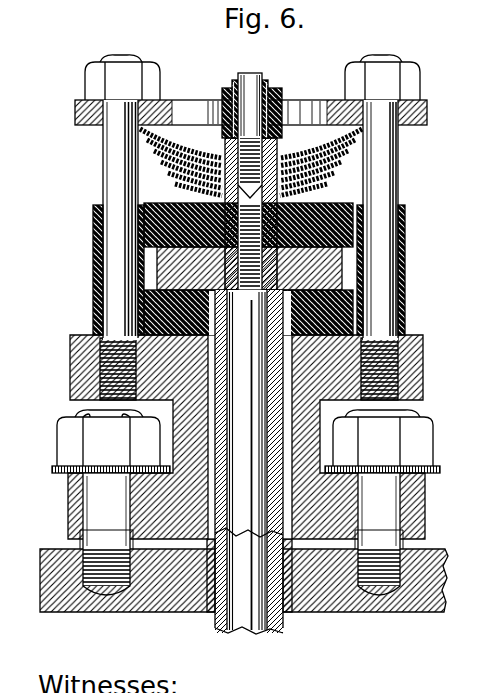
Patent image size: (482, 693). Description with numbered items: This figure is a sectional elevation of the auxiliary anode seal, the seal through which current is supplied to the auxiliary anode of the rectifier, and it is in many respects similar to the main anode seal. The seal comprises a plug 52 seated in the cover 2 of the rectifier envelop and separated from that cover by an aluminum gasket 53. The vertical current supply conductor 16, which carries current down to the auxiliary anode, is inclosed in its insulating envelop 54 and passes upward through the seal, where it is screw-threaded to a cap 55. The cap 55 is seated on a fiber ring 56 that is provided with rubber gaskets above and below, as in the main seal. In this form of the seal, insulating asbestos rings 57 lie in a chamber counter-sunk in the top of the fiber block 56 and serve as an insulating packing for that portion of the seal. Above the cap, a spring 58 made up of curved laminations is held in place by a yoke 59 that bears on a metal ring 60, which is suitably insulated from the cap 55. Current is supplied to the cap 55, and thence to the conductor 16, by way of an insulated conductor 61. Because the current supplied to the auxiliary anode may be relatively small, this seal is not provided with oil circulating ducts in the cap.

The cover 2 is at (481, 562).
The vertical current supply conductor 16 is at (284, 614).
The plug 52 is at (481, 371).
The aluminum gasket 53 is at (195, 549).
The insulating envelop 54 is at (246, 632).
The cap 55 is at (357, 273).
The fiber ring 56 is at (355, 319).
The insulating asbestos rings 57 is at (215, 286).
The spring 58 is at (148, 157).
The yoke 59 is at (168, 100).
The metal ring 60 is at (155, 206).
The insulated conductor 61 is at (258, 73).